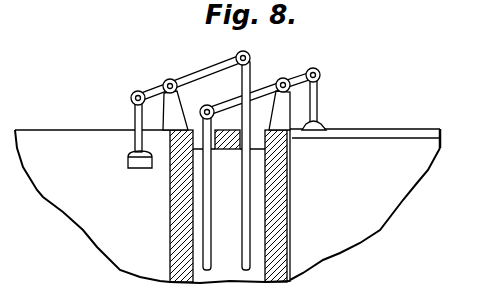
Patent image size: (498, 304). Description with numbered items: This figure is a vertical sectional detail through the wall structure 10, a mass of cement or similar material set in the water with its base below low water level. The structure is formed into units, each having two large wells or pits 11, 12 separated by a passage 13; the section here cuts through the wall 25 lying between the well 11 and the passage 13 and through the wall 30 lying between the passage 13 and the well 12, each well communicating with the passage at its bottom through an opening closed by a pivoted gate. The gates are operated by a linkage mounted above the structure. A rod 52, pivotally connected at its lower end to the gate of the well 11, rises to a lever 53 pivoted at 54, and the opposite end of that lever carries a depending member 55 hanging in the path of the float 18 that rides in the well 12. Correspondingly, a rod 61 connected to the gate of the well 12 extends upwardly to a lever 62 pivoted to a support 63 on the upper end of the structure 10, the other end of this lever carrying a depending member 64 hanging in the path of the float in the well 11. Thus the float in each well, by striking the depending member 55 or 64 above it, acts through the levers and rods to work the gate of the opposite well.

The wall structure 10 is at (393, 128).
The well 11 is at (88, 216).
The well 12 is at (432, 132).
The passage 13 is at (230, 274).
The float 18 is at (367, 217).
The wall 25 is at (182, 276).
The wall 30 is at (280, 279).
The rod 52 is at (211, 182).
The lever 53 is at (298, 77).
The pivot 54 is at (290, 105).
The depending member 55 is at (317, 134).
The rod 61 is at (251, 72).
The lever 62 is at (196, 73).
The support 63 is at (180, 100).
The depending member 64 is at (137, 169).